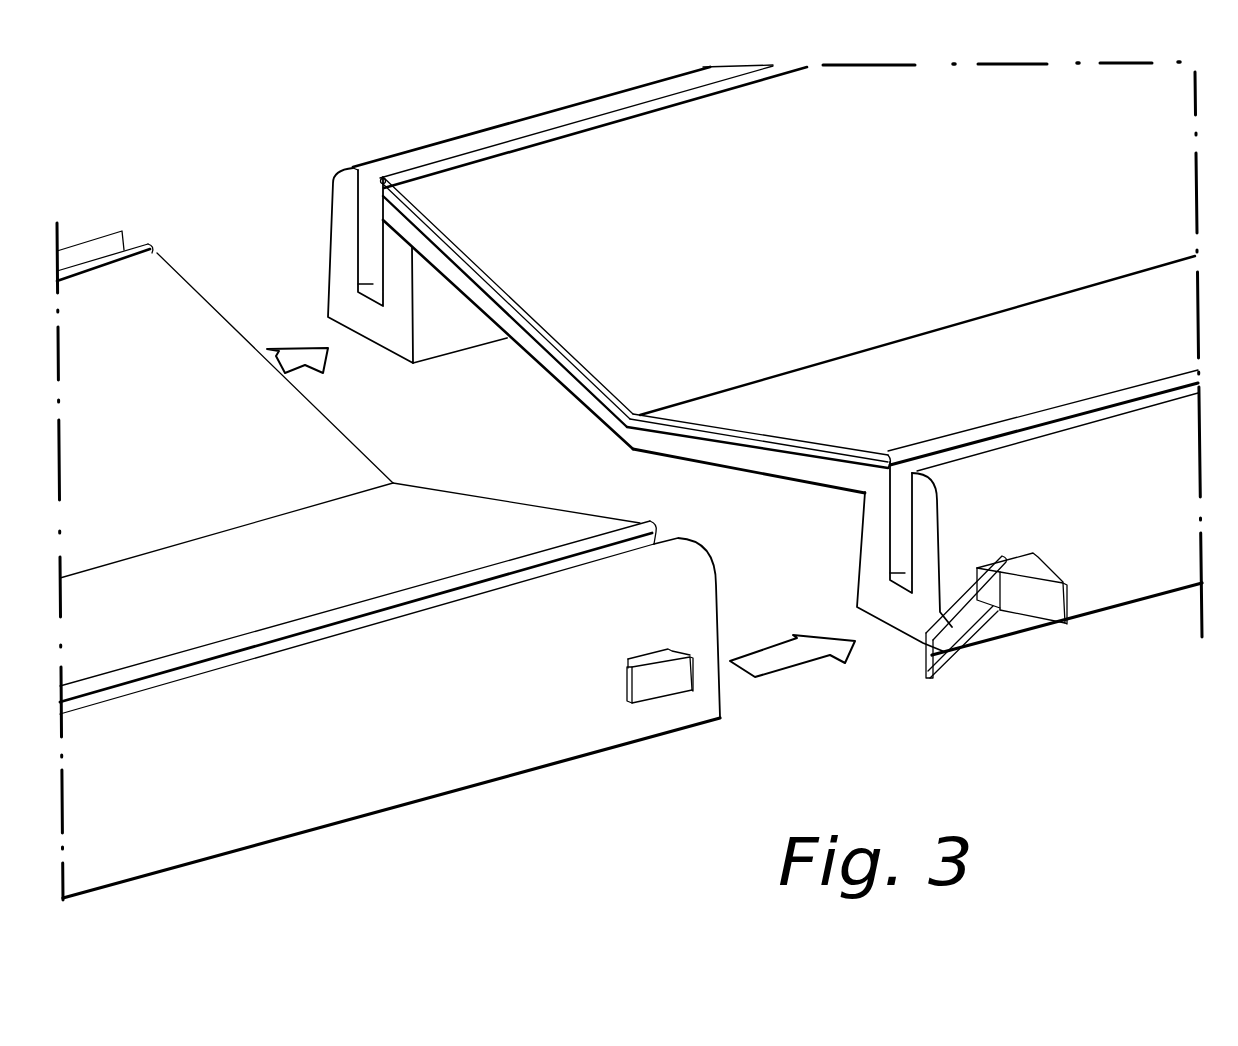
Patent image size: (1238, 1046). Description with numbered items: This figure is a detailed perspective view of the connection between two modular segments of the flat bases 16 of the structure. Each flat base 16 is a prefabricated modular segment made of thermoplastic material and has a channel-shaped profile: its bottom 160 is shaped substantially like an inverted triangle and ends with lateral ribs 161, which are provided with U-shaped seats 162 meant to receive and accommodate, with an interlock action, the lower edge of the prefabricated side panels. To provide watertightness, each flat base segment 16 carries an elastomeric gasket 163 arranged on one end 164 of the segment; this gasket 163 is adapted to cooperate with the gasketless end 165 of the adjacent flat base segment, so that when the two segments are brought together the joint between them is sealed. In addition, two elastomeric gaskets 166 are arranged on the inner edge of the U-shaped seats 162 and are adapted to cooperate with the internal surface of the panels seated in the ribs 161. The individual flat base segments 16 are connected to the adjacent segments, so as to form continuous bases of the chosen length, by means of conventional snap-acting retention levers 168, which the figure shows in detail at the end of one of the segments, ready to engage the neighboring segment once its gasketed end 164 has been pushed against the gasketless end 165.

The flat base 16 is at (567, 767).
The bottom 160 is at (716, 301).
The lateral rib 161 is at (330, 272).
The U-shaped seat 162 is at (358, 233).
The elastomeric gasket 163 is at (530, 324).
The end of the segment 164 is at (725, 456).
The gasketless end 165 is at (522, 501).
The elastomeric gasket 166 is at (660, 108).
The snap-acting retention lever 168 is at (1043, 610).